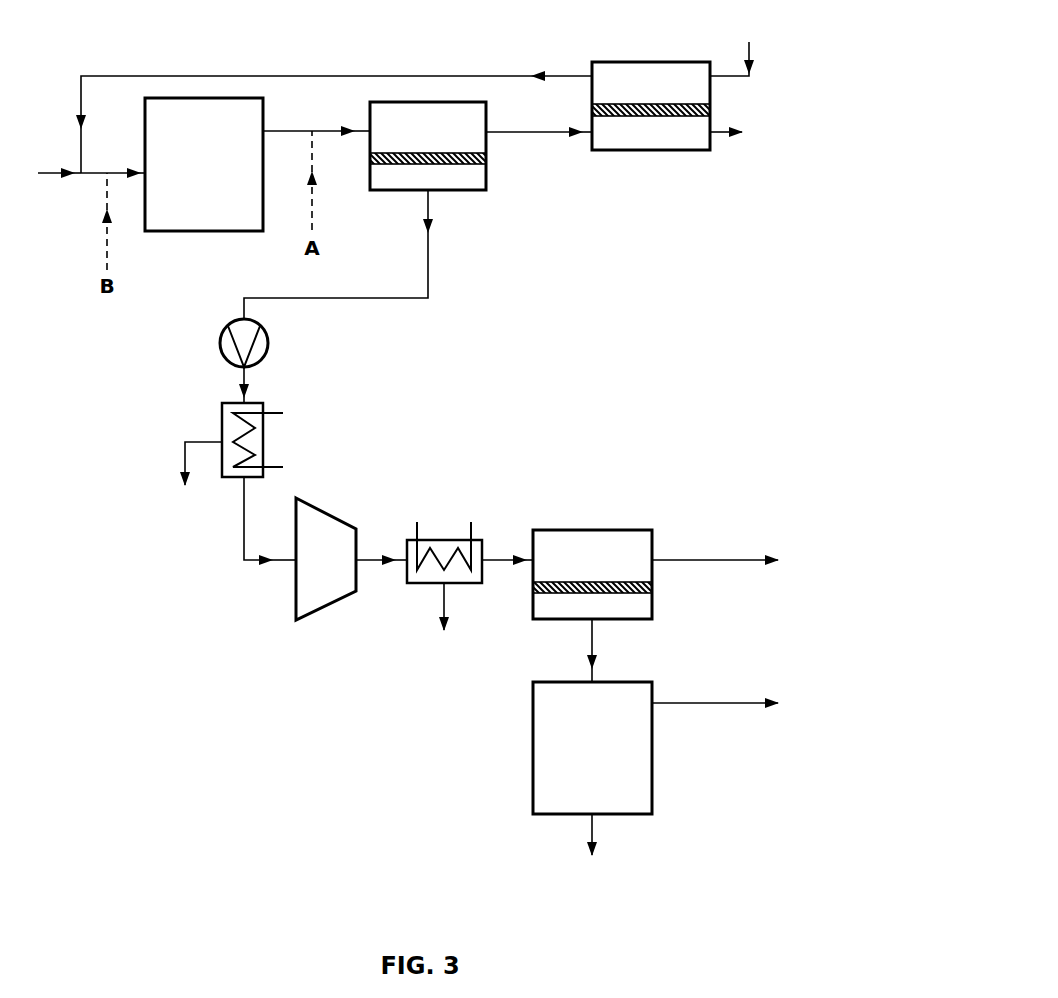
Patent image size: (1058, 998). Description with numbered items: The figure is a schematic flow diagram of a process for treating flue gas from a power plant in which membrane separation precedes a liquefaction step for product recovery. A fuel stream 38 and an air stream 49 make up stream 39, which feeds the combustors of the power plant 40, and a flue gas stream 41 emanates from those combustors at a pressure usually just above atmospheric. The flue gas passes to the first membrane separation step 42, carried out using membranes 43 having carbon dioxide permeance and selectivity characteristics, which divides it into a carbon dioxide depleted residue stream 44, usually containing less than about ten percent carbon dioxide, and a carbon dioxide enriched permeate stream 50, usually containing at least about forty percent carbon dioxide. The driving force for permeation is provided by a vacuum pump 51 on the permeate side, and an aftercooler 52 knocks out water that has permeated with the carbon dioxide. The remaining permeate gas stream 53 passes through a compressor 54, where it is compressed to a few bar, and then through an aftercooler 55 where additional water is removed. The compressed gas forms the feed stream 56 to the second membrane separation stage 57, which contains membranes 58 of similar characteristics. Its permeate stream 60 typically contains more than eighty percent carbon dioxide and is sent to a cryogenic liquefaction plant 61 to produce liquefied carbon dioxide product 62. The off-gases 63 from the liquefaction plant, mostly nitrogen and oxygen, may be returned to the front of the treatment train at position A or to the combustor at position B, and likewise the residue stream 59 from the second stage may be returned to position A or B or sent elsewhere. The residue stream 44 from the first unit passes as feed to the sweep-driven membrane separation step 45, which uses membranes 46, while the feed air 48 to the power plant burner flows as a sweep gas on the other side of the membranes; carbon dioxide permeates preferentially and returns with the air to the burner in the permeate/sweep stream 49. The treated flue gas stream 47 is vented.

The fuel stream 38 is at (53, 161).
The feed stream to power plant 39 is at (113, 161).
The power plant 40 is at (200, 231).
The flue gas stream 41 is at (316, 116).
The first membrane separation step 42 is at (457, 146).
The membranes 43 is at (397, 153).
The carbon dioxide depleted residue stream 44 is at (539, 116).
The sweep-driven membrane separation step 45 is at (651, 133).
The membranes 46 is at (632, 104).
The treated flue gas stream 47 is at (740, 132).
The feed air 48 is at (736, 44).
The permeate/sweep stream 49 is at (336, 109).
The carbon dioxide enriched permeate stream 50 is at (355, 254).
The vacuum pump 51 is at (268, 345).
The aftercooler 52 is at (222, 405).
The remaining permeate gas stream 53 is at (270, 518).
The compressor 54 is at (322, 611).
The aftercooler 55 is at (455, 540).
The feed stream 56 is at (507, 543).
The second membrane separation stage 57 is at (592, 546).
The membranes 58 is at (572, 582).
The residue stream 59 is at (768, 566).
The permeate stream 60 is at (611, 650).
The cryogenic liquefaction plant 61 is at (533, 710).
The liquefied carbon dioxide product 62 is at (592, 847).
The off-gases 63 is at (768, 709).